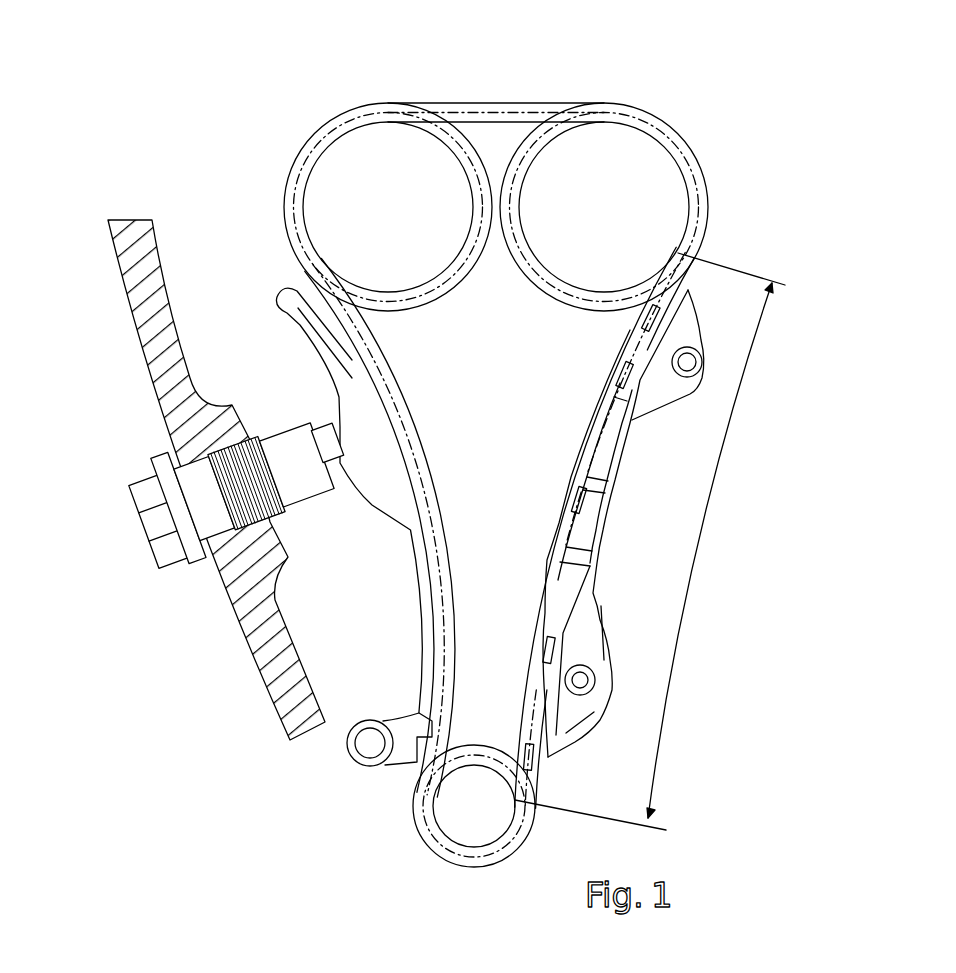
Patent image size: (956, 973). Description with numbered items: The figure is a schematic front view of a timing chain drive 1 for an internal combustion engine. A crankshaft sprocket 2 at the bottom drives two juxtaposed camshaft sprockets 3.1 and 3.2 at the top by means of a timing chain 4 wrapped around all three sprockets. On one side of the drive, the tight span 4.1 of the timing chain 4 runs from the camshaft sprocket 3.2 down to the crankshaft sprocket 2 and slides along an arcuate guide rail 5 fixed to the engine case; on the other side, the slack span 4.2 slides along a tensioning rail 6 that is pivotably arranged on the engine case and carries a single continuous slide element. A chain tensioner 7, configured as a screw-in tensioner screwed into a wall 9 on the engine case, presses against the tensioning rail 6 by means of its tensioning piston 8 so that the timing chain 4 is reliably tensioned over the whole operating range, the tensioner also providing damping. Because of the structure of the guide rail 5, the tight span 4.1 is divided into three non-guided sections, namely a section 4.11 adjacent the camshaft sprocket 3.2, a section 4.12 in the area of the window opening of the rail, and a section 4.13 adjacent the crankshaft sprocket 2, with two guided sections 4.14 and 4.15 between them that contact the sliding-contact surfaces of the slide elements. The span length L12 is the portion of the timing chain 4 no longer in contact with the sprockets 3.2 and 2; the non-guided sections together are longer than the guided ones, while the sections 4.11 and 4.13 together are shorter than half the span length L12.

The timing chain drive 1 is at (697, 98).
The crankshaft sprocket 2 is at (470, 808).
The camshaft sprocket 3.1 is at (370, 208).
The camshaft sprocket 3.2 is at (613, 187).
The timing chain 4 is at (500, 470).
The tight span 4.1 is at (628, 517).
The slack span 4.2 is at (340, 298).
The section 4.11 is at (652, 318).
The section 4.12 is at (590, 493).
The section 4.13 is at (533, 757).
The guided section 4.14 is at (628, 375).
The guided section 4.15 is at (550, 650).
The guide rail 5 is at (619, 603).
The tensioning rail 6 is at (410, 662).
The chain tensioner 7 is at (153, 585).
The tensioning piston 8 is at (342, 480).
The wall 9 is at (150, 358).
The span length L12 is at (697, 555).